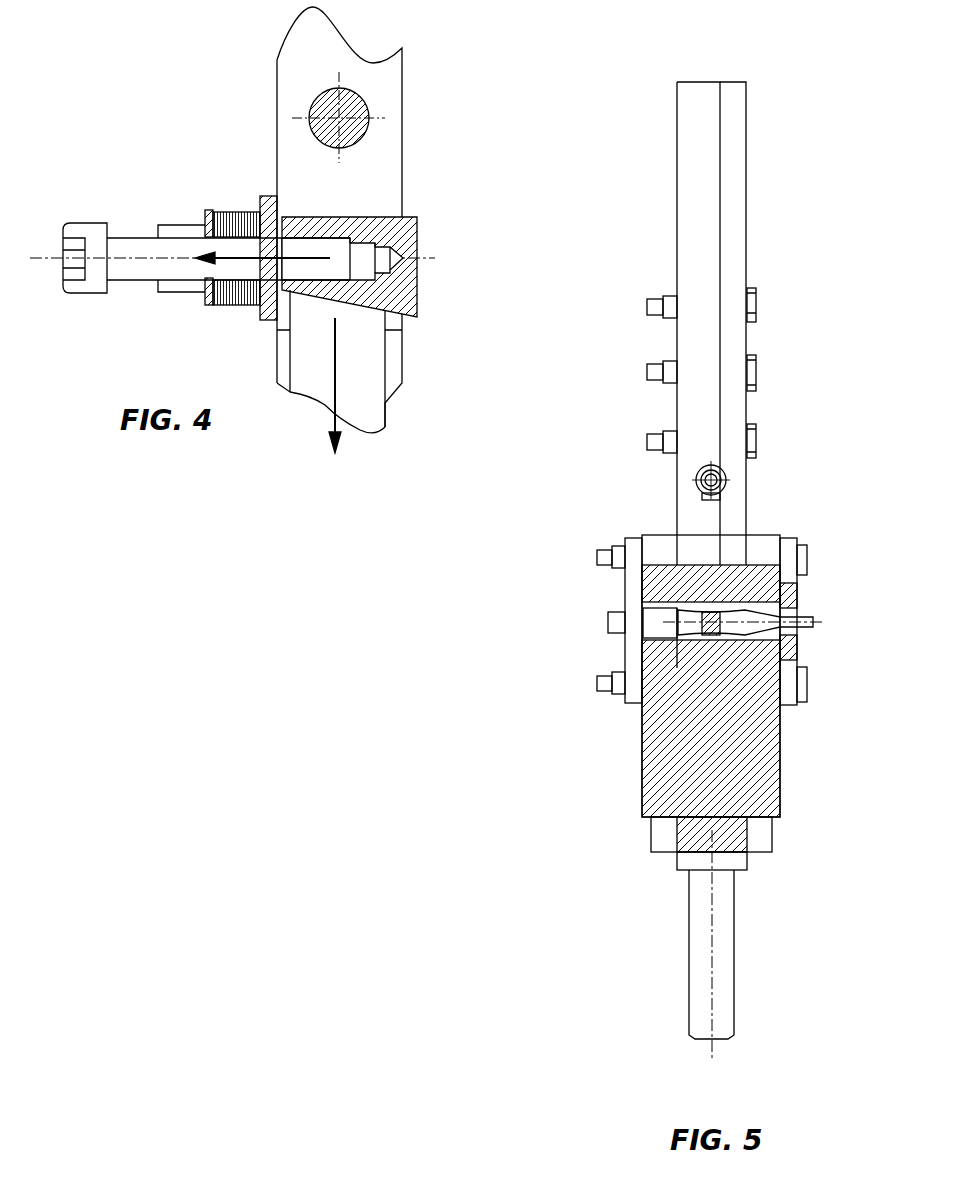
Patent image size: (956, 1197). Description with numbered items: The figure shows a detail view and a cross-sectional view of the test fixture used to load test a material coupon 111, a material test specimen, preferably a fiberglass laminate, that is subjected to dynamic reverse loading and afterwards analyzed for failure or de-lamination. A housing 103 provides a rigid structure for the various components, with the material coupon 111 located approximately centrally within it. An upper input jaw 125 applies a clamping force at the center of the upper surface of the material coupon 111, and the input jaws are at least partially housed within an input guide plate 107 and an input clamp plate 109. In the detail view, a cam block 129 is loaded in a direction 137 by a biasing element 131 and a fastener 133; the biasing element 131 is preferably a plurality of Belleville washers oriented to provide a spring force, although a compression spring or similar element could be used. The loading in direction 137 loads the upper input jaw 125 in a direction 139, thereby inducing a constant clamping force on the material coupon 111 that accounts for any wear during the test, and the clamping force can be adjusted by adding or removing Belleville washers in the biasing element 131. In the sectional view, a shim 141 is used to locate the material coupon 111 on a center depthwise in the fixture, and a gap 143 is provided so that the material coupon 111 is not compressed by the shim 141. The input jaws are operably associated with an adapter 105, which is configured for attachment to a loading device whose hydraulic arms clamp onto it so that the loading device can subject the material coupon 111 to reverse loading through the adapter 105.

In FIG. 5, the housing 103 is at (642, 790).
In FIG. 5, the adapter 105 is at (689, 977).
In FIG. 5, the input guide plate 107 is at (688, 82).
In FIG. 5, the input clamp plate 109 is at (745, 82).
In FIG. 5, the material coupon 111 is at (715, 613).
In FIG. 4, the upper input jaw 125 is at (387, 382).
In FIG. 4, the cam block 129 is at (415, 217).
In FIG. 4, the biasing element 131 is at (232, 212).
In FIG. 4, the fastener 133 is at (100, 225).
In FIG. 5, the fastener 133 is at (703, 482).
In FIG. 4, the direction 137 is at (267, 257).
In FIG. 4, the direction 139 is at (338, 383).
In FIG. 5, the shim 141 is at (642, 612).
In FIG. 5, the gap 143 is at (688, 658).